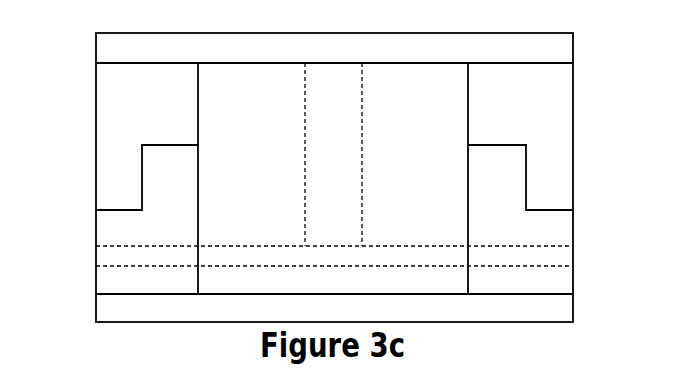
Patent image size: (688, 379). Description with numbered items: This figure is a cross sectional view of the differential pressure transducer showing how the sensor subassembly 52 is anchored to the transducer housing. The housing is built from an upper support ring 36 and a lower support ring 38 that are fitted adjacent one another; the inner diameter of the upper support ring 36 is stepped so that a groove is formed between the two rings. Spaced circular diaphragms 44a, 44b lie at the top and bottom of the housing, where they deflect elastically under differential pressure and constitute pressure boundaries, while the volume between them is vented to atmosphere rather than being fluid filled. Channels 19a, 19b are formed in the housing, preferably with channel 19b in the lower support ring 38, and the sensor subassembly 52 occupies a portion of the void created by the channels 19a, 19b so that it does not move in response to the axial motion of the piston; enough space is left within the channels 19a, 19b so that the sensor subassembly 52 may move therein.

The diaphragm 44a is at (535, 33).
The diaphragm 44b is at (225, 310).
The upper support ring 36 is at (157, 112).
The lower support ring 38 is at (120, 233).
The sensor subassembly 52 is at (338, 98).
The channel 19a is at (365, 258).
The channel 19b is at (107, 259).